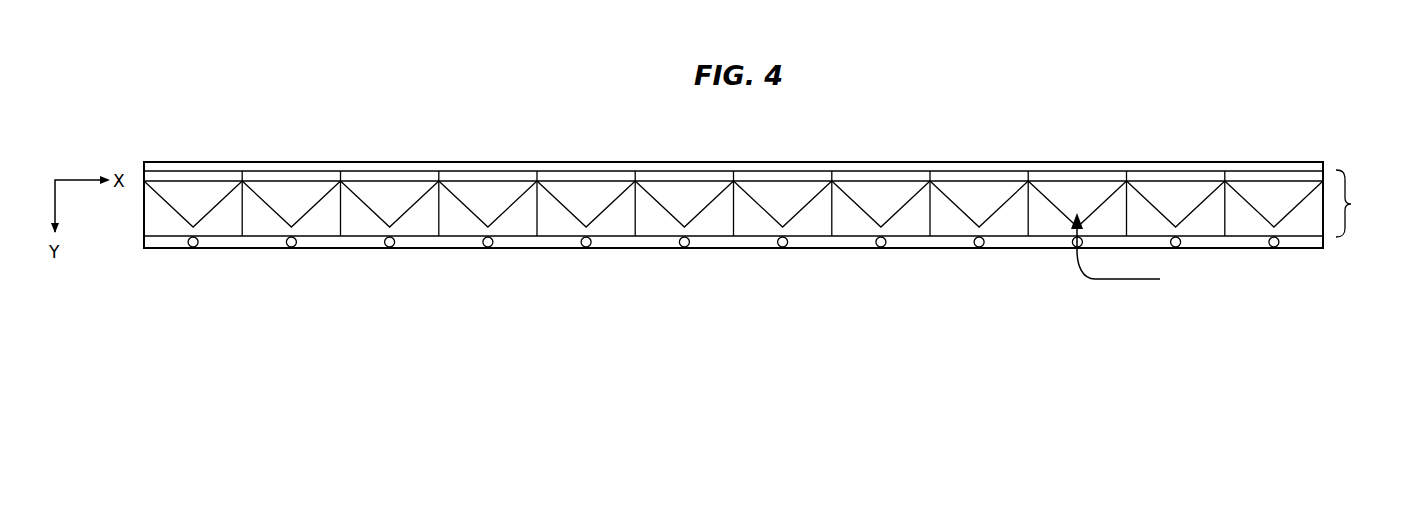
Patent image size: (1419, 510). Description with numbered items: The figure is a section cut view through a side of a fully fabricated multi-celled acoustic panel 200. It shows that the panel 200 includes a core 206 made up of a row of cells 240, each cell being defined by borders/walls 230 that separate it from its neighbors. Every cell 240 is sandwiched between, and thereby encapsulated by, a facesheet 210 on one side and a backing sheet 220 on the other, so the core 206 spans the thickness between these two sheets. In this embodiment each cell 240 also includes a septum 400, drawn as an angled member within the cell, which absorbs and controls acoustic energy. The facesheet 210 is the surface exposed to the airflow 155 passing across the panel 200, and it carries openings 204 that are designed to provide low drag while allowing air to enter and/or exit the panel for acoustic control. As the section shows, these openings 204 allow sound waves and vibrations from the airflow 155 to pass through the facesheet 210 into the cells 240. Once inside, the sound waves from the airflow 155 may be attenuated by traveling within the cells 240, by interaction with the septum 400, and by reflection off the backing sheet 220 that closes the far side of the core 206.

The acoustic panel 200 is at (1097, 122).
The backing sheet 220 is at (474, 170).
The facesheet 210 is at (462, 240).
The borders/walls 230 is at (833, 222).
The cells 240 is at (803, 222).
The septum 400 is at (1290, 213).
The openings 204 is at (1072, 240).
The airflow 155 is at (1115, 279).
The core 206 is at (1363, 203).